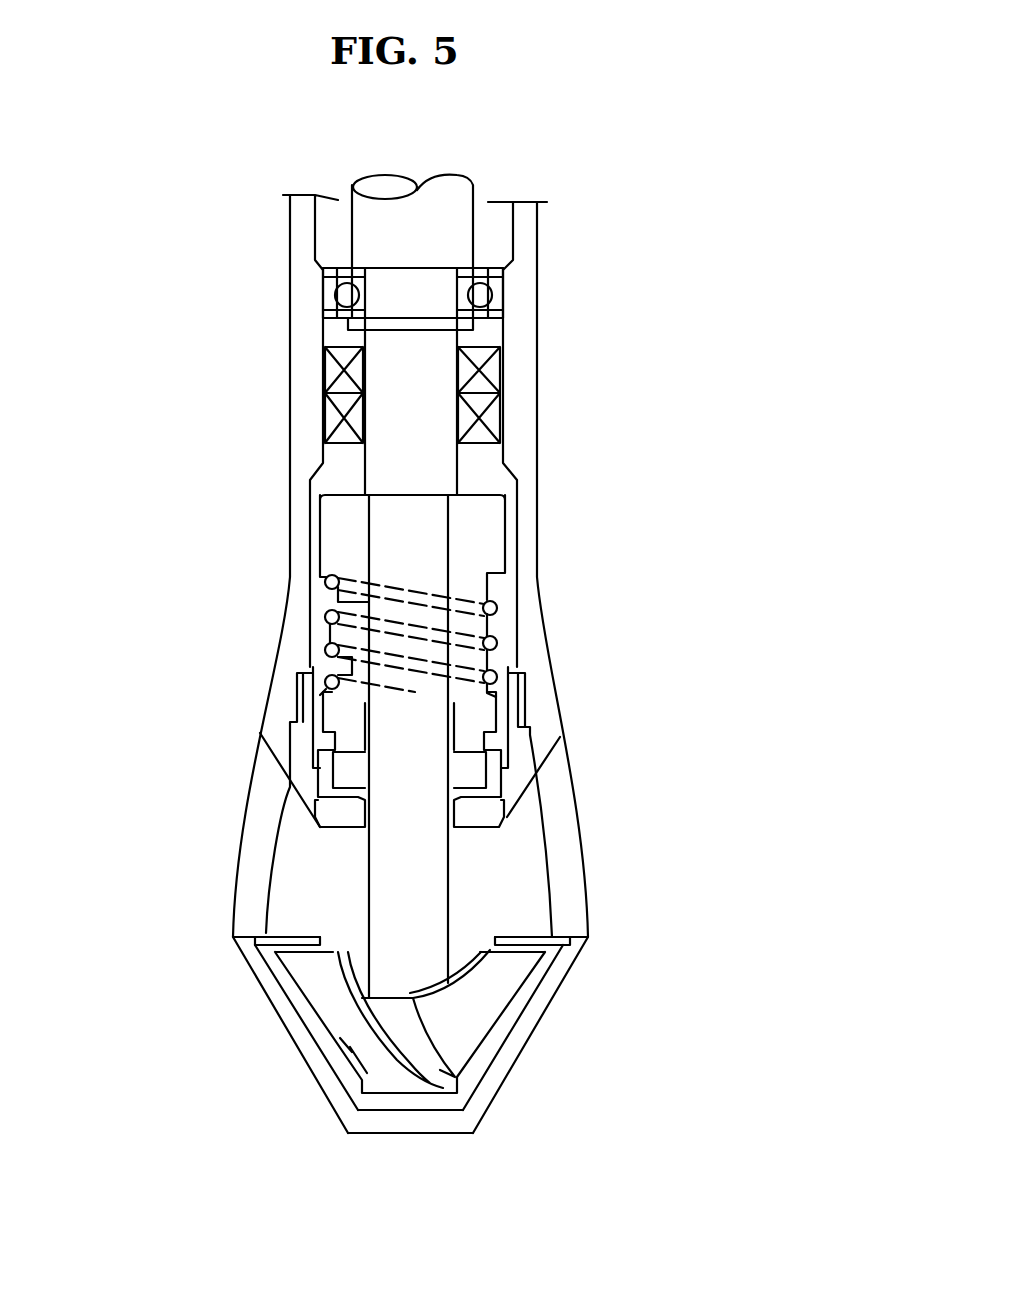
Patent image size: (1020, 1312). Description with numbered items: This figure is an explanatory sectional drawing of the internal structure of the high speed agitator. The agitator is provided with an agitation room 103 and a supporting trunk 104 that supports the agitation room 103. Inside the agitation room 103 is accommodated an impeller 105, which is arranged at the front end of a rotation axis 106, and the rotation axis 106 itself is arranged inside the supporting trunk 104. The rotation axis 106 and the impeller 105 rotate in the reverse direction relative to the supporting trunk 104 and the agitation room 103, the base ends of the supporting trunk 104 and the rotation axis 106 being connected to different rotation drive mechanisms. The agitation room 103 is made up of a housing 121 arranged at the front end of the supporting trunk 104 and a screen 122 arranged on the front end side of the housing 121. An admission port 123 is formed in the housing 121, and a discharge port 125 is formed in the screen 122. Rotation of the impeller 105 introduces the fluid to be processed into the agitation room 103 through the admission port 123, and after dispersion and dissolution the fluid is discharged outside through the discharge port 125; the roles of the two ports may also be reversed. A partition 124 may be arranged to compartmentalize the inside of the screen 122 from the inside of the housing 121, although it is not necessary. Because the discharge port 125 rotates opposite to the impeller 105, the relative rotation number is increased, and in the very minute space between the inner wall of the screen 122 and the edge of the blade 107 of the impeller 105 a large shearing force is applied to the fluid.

The agitation room 103 is at (488, 1019).
The supporting trunk 104 is at (443, 566).
The impeller 105 is at (457, 1075).
The rotation axis 106 is at (430, 903).
The blade 107 is at (508, 993).
The housing 121 is at (516, 676).
The screen 122 is at (353, 1106).
The admission port 123 is at (415, 802).
The partition 124 is at (389, 907).
The discharge port 125 is at (450, 1027).